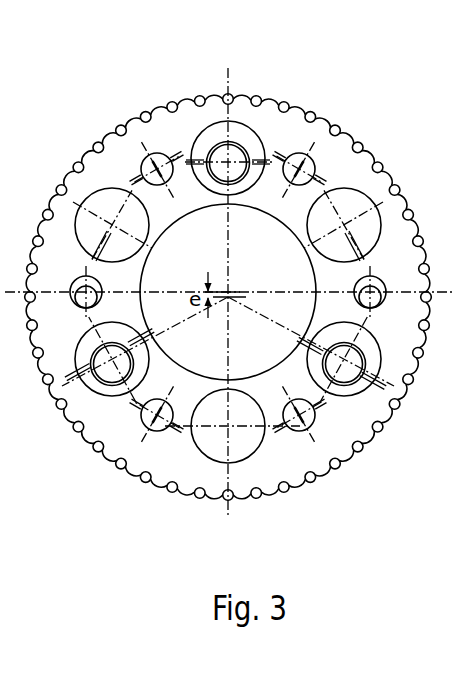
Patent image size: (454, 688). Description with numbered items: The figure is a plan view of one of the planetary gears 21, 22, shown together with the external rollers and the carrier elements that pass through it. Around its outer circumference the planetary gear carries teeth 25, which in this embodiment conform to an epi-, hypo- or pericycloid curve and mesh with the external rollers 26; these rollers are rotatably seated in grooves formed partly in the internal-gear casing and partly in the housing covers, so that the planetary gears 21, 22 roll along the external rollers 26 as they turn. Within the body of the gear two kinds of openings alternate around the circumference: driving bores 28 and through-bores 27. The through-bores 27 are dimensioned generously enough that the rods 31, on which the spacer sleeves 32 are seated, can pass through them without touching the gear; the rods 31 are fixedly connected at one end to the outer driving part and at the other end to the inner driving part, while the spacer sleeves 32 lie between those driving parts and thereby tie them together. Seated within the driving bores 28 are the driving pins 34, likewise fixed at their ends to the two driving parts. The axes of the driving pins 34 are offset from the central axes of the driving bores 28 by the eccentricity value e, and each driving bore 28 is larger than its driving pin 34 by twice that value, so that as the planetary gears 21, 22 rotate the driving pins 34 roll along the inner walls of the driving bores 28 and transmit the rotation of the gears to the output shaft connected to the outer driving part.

The planetary gear 21 is at (228, 270).
The planetary gear 22 is at (289, 104).
The teeth 25 is at (372, 158).
The external rollers 26 is at (231, 96).
The through-bores 27 is at (381, 223).
The driving bores 28 is at (307, 153).
The rods 31 is at (341, 373).
The spacer sleeves 32 is at (383, 414).
The driving pins 34 is at (294, 437).